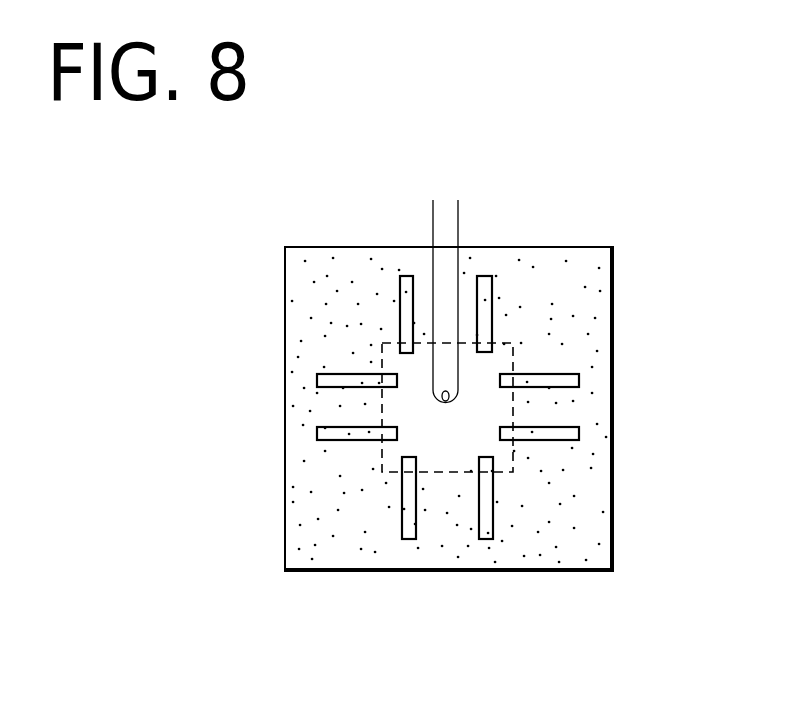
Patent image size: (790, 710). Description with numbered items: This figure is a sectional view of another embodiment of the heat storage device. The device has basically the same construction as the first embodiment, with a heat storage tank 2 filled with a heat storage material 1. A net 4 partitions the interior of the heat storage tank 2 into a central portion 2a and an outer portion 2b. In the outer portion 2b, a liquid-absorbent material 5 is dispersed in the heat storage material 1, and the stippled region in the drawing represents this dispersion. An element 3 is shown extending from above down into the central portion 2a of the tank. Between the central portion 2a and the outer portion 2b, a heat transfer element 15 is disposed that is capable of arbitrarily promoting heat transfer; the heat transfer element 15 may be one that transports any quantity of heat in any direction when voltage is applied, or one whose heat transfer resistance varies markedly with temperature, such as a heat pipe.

The heat storage material 1 is at (595, 293).
The heat storage tank 2 is at (613, 392).
The central portion 2a is at (448, 447).
The outer portion 2b is at (573, 479).
The wire 3 is at (458, 224).
The net 4 is at (383, 457).
The liquid-absorbent material 5 is at (590, 533).
The heat transfer element 15 is at (317, 432).